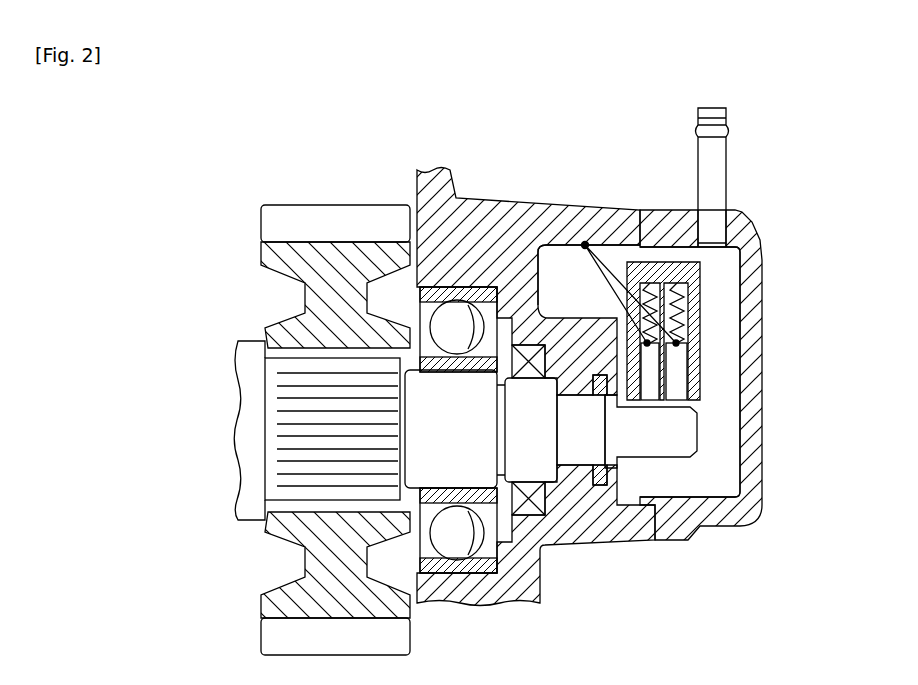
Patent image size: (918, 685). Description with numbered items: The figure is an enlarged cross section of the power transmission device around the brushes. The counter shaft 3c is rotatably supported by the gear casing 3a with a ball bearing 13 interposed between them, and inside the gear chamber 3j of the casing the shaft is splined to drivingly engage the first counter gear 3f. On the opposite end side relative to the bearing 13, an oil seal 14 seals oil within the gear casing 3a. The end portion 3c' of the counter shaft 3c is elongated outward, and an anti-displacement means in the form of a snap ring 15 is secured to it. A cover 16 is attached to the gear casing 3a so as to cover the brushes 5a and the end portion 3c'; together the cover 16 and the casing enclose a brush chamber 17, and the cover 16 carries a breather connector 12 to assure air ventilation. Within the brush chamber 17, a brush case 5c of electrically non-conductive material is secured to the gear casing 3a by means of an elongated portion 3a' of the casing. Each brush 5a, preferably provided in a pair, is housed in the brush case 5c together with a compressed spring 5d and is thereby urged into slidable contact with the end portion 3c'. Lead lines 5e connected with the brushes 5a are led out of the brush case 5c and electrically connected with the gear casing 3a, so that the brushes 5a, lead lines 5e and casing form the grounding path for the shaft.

The gear chamber 3j is at (229, 301).
The first counter gear 3f is at (327, 205).
The counter shaft 3c is at (290, 429).
The gear casing 3a is at (536, 374).
The elongated portion 3a' is at (589, 281).
The ball bearing 13 is at (460, 320).
The oil seal 14 is at (530, 505).
The snap ring 15 is at (600, 485).
The end portion 3c' is at (651, 449).
The cover 16 is at (762, 378).
The brush chamber 17 is at (727, 465).
The breather connector 12 is at (727, 160).
The brush case 5c is at (697, 270).
The compressed spring 5d is at (645, 300).
The brush 5a is at (680, 380).
The lead line 5e is at (622, 255).